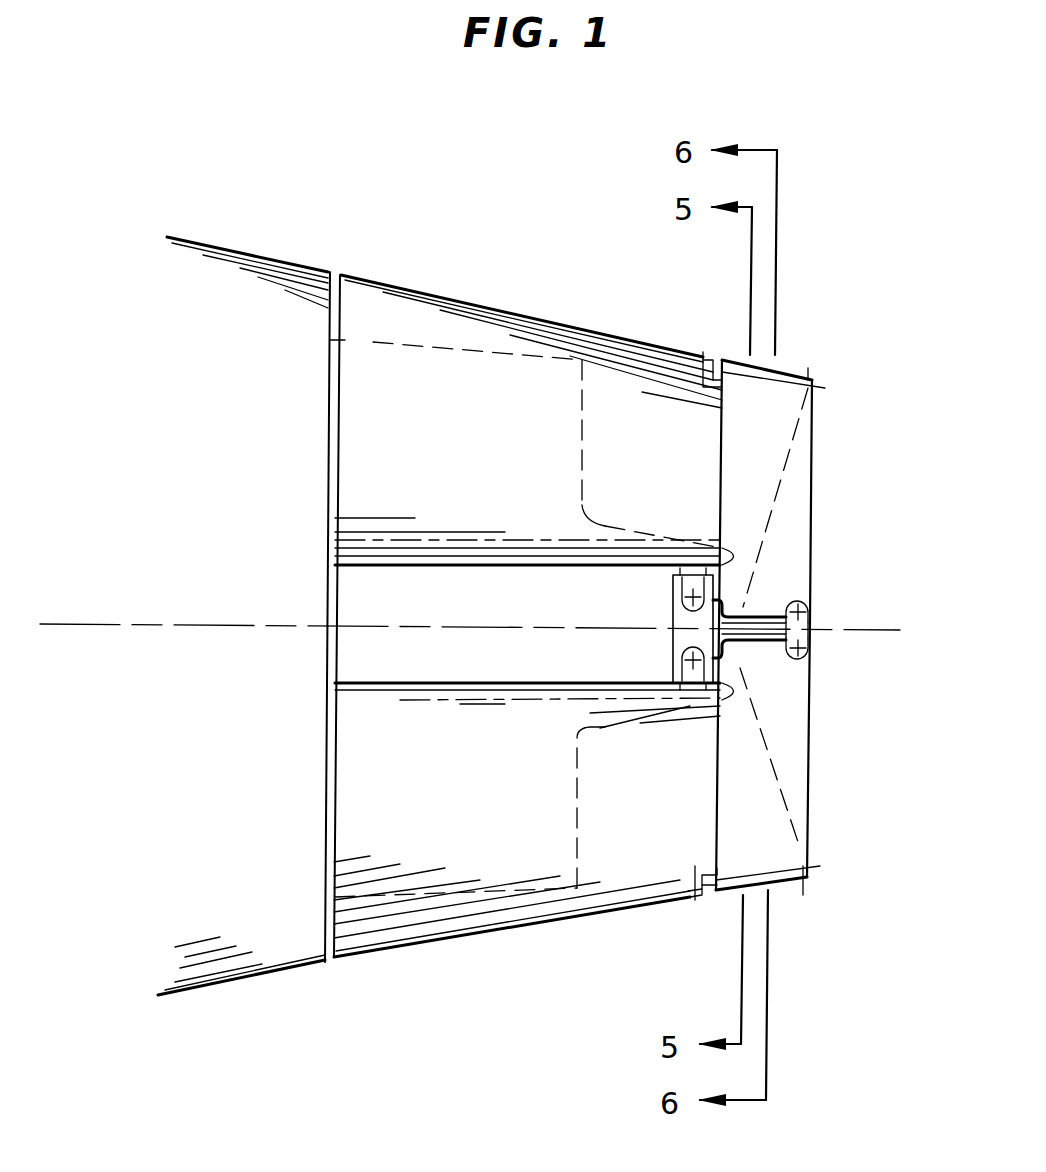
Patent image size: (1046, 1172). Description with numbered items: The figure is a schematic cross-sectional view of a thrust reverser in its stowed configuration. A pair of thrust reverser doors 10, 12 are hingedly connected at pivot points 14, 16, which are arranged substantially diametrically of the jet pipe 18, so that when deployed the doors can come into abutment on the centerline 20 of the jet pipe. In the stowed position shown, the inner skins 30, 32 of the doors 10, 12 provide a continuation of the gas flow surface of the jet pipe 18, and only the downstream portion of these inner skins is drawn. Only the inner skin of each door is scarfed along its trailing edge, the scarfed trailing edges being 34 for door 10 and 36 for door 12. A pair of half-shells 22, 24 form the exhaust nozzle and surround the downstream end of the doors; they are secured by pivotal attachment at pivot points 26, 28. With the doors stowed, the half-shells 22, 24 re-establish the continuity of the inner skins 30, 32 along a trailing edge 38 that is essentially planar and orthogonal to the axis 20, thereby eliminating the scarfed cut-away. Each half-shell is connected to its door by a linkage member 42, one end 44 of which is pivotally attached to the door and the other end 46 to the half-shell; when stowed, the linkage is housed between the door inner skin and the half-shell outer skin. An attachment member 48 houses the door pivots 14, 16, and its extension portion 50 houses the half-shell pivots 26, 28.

The thrust reverser door 10 is at (568, 330).
The thrust reverser door 12 is at (492, 912).
The pivot point 14 is at (690, 598).
The pivot point 16 is at (688, 681).
The jet pipe 18 is at (650, 718).
The centerline 20 is at (852, 632).
The half-shell 22 is at (778, 343).
The half-shell 24 is at (735, 897).
The pivot point 26 is at (810, 600).
The pivot point 28 is at (808, 655).
The inner skin 30 is at (748, 390).
The inner skin 32 is at (778, 870).
The scarfed trailing edge 34 is at (790, 470).
The scarfed trailing edge 36 is at (775, 788).
The trailing edge 38 is at (812, 420).
The linkage member 42 is at (738, 375).
The end of linkage member 44 is at (690, 890).
The end of linkage member 46 is at (805, 872).
The attachment member 48 is at (688, 652).
The extension portion 50 is at (745, 640).